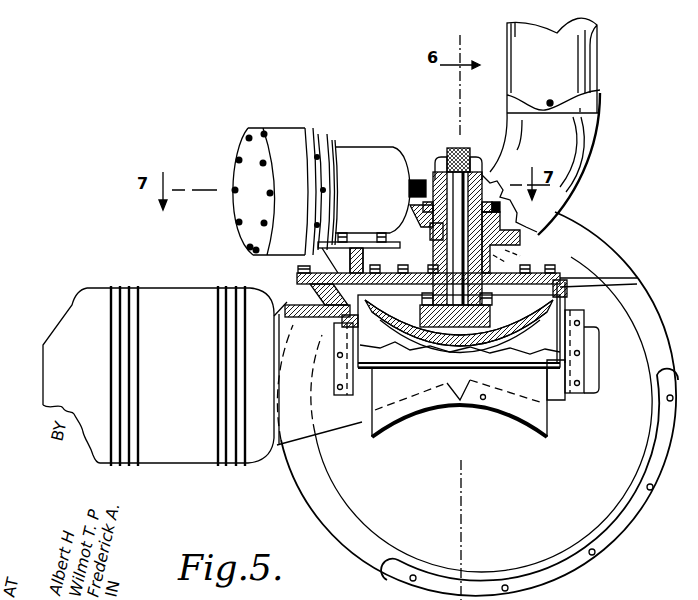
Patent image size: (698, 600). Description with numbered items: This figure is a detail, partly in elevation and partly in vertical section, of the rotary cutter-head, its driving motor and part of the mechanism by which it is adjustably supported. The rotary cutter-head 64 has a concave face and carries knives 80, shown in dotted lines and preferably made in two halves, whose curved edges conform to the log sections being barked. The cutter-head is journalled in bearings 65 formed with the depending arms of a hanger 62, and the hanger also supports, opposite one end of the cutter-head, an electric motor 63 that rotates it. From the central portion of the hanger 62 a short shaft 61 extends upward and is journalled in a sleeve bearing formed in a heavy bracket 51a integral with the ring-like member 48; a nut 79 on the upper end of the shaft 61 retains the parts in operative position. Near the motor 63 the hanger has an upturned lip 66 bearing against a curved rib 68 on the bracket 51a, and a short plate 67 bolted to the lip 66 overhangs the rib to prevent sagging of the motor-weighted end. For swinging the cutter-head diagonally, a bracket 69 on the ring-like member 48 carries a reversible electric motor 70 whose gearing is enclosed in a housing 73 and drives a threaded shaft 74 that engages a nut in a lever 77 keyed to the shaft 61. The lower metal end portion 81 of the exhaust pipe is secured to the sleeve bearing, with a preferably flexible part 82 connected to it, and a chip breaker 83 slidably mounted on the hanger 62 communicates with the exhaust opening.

The ring-like member 48 is at (337, 486).
The bracket 51a is at (575, 290).
The short shaft 61 is at (471, 170).
The hanger 62 is at (568, 280).
The electric motor 63 is at (172, 293).
The rotary cutter-head 64 is at (522, 405).
The bearings 65 is at (363, 420).
The upturned lip 66 is at (296, 279).
The short plate 67 is at (297, 269).
The flange or rib 68 is at (350, 246).
The bracket 69 is at (370, 246).
The reversible electric motor 70 is at (363, 155).
The housing 73 is at (279, 137).
The threaded shaft 74 is at (418, 178).
The lever 77 is at (492, 178).
The nut 79 is at (442, 158).
The knives 80 is at (497, 370).
The lower metal end portion of exhaust pipe 81 is at (563, 194).
The exhaust pipe part 82 is at (587, 78).
The chip breaker 83 is at (423, 355).